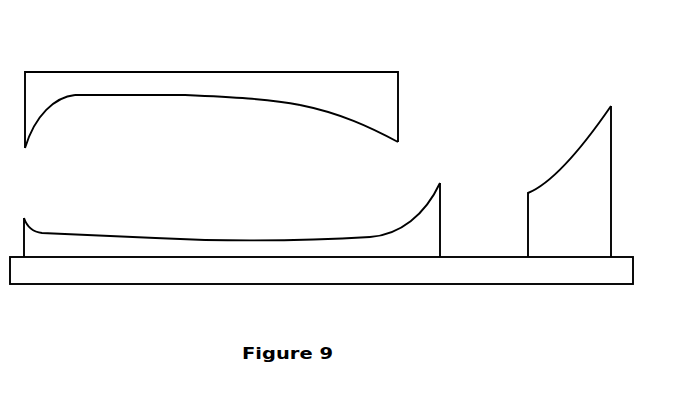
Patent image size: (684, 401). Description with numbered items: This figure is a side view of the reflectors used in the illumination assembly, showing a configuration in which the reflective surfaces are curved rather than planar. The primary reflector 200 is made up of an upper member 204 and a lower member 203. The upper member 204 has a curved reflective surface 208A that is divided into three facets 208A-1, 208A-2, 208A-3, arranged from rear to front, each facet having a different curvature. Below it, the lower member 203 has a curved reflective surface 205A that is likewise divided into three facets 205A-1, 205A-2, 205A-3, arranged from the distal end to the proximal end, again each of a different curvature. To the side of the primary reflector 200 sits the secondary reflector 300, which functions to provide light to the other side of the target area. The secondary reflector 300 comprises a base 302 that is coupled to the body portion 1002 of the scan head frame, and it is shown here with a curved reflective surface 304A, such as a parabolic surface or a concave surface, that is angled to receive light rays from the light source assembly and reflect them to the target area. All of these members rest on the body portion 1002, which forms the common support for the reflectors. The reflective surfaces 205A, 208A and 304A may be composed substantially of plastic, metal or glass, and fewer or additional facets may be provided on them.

The primary reflector 200 is at (129, 46).
The upper member 204 is at (398, 105).
The curved reflective surface 208A is at (192, 137).
The facet 208A-1 is at (58, 106).
The facet 208A-2 is at (185, 96).
The facet 208A-3 is at (345, 118).
The lower member 203 is at (441, 220).
The curved reflective surface 205A is at (208, 205).
The facet 205A-1 is at (38, 230).
The facet 205A-2 is at (205, 240).
The facet 205A-3 is at (423, 203).
The secondary reflector 300 is at (534, 70).
The base 302 is at (613, 172).
The curved reflective surface 304A is at (560, 168).
The body portion 1002 is at (457, 283).